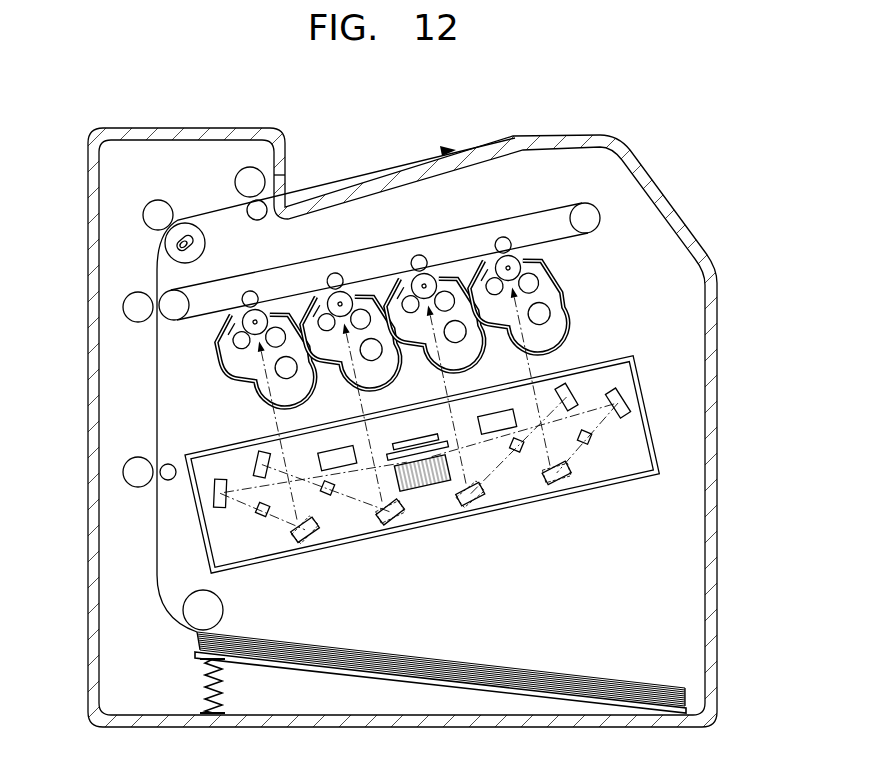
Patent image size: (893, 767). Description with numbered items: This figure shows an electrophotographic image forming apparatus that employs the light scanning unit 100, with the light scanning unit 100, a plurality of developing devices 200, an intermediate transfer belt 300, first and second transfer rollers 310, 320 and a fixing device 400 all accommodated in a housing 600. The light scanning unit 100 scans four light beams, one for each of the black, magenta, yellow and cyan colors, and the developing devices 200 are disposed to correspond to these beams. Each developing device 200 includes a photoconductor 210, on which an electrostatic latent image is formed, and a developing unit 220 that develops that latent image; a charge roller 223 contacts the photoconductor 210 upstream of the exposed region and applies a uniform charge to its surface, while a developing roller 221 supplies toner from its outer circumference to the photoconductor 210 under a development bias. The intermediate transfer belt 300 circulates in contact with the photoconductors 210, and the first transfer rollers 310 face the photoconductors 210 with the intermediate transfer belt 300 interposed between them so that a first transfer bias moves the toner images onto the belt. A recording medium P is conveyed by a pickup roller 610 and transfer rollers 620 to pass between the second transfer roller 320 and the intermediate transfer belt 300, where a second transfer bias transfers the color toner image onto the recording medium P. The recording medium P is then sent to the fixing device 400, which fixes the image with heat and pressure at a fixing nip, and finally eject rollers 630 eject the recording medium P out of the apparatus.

The light scanning unit 100 is at (562, 516).
The developing device 200 is at (444, 337).
The photoconductor 210 is at (520, 259).
The developing unit 220 is at (582, 302).
The developing roller 221 is at (541, 281).
The charge roller 223 is at (493, 292).
The intermediate transfer belt 300 is at (545, 206).
The first transfer roller 310 is at (500, 236).
The second transfer roller 320 is at (125, 306).
The fixing device 400 is at (122, 227).
The housing 600 is at (713, 356).
The pickup roller 610 is at (224, 613).
The transfer rollers 620 is at (125, 472).
The eject rollers 630 is at (243, 179).
The recording medium P is at (464, 662).